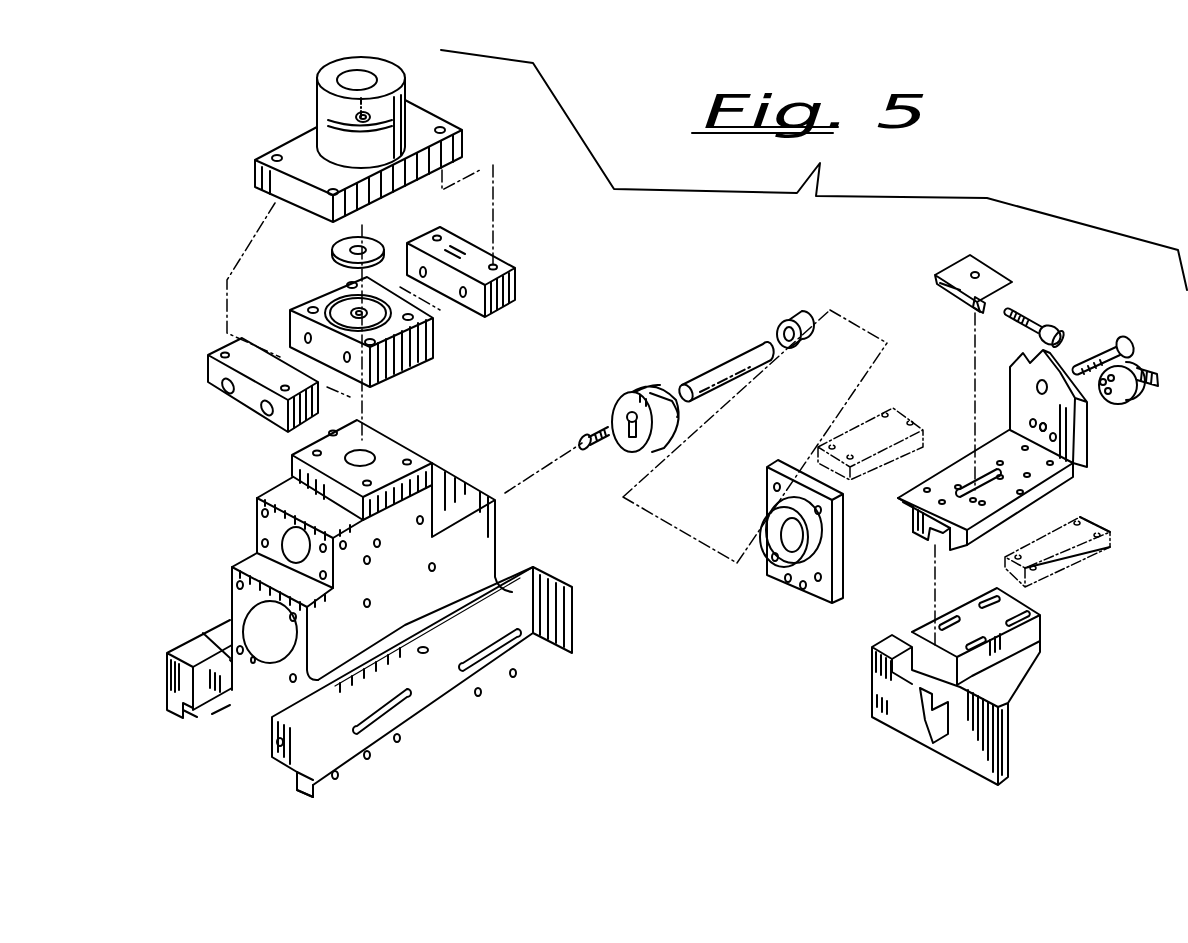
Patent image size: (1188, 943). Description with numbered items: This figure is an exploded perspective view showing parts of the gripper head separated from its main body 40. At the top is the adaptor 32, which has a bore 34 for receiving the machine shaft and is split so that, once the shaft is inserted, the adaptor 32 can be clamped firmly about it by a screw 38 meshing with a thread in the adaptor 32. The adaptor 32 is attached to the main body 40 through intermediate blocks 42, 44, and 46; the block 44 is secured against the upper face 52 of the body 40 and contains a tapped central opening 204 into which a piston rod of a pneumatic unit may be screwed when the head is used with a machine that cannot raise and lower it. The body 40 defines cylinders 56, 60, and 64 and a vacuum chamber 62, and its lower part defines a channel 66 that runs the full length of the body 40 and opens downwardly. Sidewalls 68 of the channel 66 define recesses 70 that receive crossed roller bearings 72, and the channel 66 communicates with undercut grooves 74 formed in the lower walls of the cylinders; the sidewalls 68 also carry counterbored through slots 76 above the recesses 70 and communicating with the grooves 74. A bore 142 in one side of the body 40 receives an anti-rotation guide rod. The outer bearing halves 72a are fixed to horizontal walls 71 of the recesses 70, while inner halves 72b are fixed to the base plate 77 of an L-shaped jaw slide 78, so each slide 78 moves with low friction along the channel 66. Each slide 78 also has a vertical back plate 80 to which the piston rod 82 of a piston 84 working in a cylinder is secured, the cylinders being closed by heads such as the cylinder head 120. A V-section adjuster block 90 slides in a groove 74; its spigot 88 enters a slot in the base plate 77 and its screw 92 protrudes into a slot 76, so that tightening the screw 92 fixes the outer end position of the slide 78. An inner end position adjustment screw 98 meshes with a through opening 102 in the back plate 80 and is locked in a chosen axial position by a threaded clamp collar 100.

The adaptor 32 is at (405, 98).
The bore 34 is at (338, 77).
The screw 38 is at (354, 118).
The intermediate block 42 is at (363, 243).
The tapped central opening 204 is at (350, 315).
The intermediate block 44 is at (354, 332).
The intermediate block 46 is at (503, 307).
The main body 40 is at (360, 610).
The upper face 52 is at (390, 447).
The vacuum chamber 62 is at (370, 463).
The cylinder 64 is at (285, 533).
The cylinder 56 is at (260, 617).
The undercut groove 74 is at (247, 675).
The sidewall 68 is at (200, 687).
The recess 70 is at (192, 717).
The channel 66 is at (252, 720).
The horizontal wall 71 is at (312, 787).
The bore 142 is at (423, 647).
The through slot 76 is at (398, 713).
The piston rod 82 is at (735, 355).
The piston 84 is at (650, 390).
The cylinder head 120 is at (835, 612).
The crossed roller bearing 72 is at (890, 410).
The bearing half 72a is at (1100, 548).
The guide block (upper) 72b is at (1087, 516).
The jaw slide 78 is at (1012, 449).
The vertical back plate 80 is at (1015, 382).
The through opening 102 is at (1046, 428).
The base plate 77 is at (903, 503).
The jaw slide outer end position adjuster block 90 is at (990, 275).
The spigot 88 is at (977, 308).
The screw 92 is at (1035, 322).
The threaded clamp collar 100 is at (1130, 370).
The jaw slide inner end position adjustment screw 98 is at (1153, 372).
The cylinder 60 is at (1012, 650).